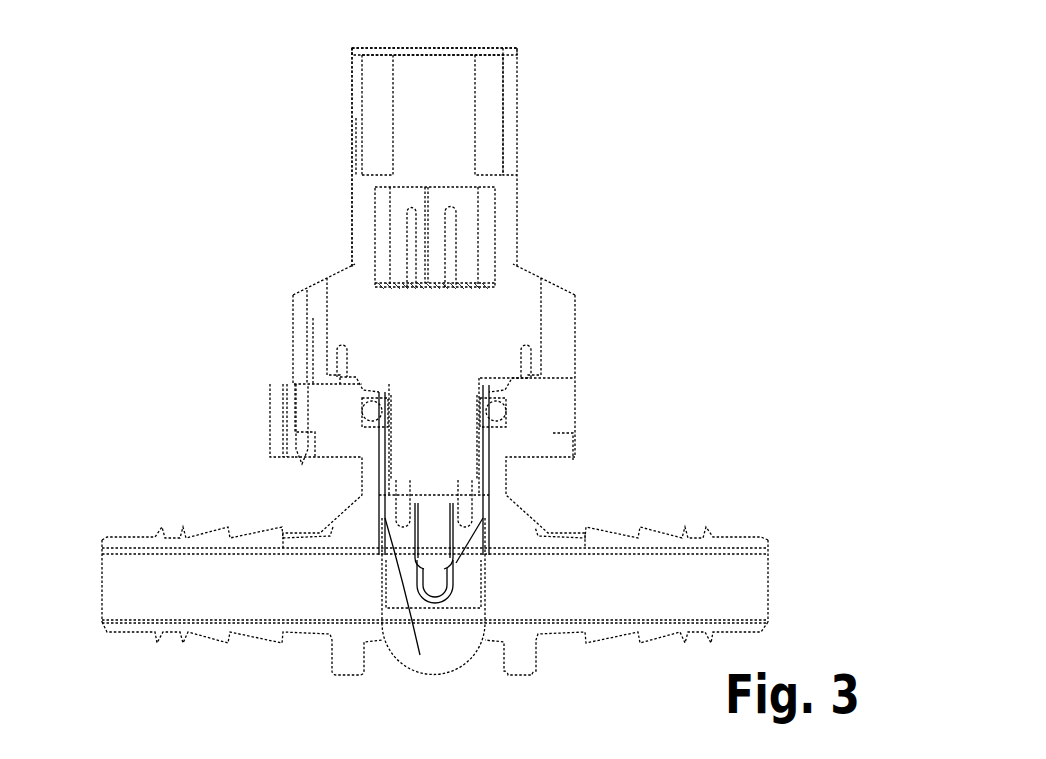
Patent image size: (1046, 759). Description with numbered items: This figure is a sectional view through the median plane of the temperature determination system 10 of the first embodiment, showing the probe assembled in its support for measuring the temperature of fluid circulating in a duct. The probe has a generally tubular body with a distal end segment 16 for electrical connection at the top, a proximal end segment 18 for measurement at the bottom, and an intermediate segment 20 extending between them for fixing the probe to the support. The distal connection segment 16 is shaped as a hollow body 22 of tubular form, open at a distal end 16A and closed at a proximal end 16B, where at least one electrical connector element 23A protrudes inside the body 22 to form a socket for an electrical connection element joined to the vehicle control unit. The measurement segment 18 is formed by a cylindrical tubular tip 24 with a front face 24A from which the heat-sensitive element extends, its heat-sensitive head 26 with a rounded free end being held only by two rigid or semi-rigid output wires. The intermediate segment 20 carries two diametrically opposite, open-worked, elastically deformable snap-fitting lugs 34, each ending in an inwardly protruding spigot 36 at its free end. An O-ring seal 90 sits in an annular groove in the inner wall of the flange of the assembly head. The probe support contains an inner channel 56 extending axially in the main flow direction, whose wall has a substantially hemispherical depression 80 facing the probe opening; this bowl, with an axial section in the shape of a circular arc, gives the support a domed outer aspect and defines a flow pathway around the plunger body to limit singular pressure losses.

The temperature determination system 10 is at (748, 195).
The distal end segment 16 is at (560, 147).
The distal end 16A is at (433, 55).
The proximal end 16B is at (493, 284).
The proximal end segment 18 is at (433, 408).
The intermediate segment 20 is at (348, 297).
The hollow body 22 is at (363, 123).
The electrical connector element 23A is at (447, 238).
The tubular tip 24 is at (433, 465).
The front face 24A is at (433, 493).
The heat-sensitive head 26 is at (437, 585).
The snap-fitting lug 34 is at (308, 316).
The spigot 36 is at (305, 441).
The inner channel 56 is at (705, 593).
The depression 80 is at (432, 657).
The O-ring seal 90 is at (364, 412).